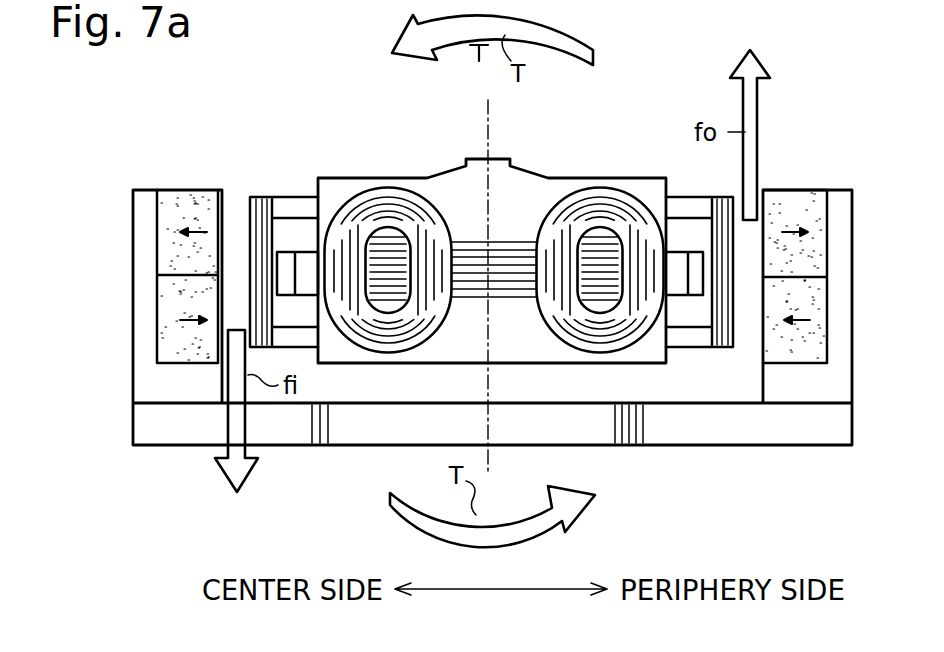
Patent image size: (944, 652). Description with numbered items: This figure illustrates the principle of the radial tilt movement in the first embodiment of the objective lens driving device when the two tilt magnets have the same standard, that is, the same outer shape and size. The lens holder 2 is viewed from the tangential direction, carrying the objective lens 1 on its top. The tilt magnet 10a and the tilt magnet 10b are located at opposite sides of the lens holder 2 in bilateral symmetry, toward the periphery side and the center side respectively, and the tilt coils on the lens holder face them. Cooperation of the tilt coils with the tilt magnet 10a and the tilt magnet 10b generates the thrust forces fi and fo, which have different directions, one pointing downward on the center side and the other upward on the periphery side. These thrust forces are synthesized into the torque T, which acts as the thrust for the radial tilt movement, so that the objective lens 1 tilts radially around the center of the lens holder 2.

The objective lens 1 is at (458, 158).
The lens holder 2 is at (545, 365).
The tilt magnet 10a is at (810, 190).
The tilt magnet 10b is at (188, 190).